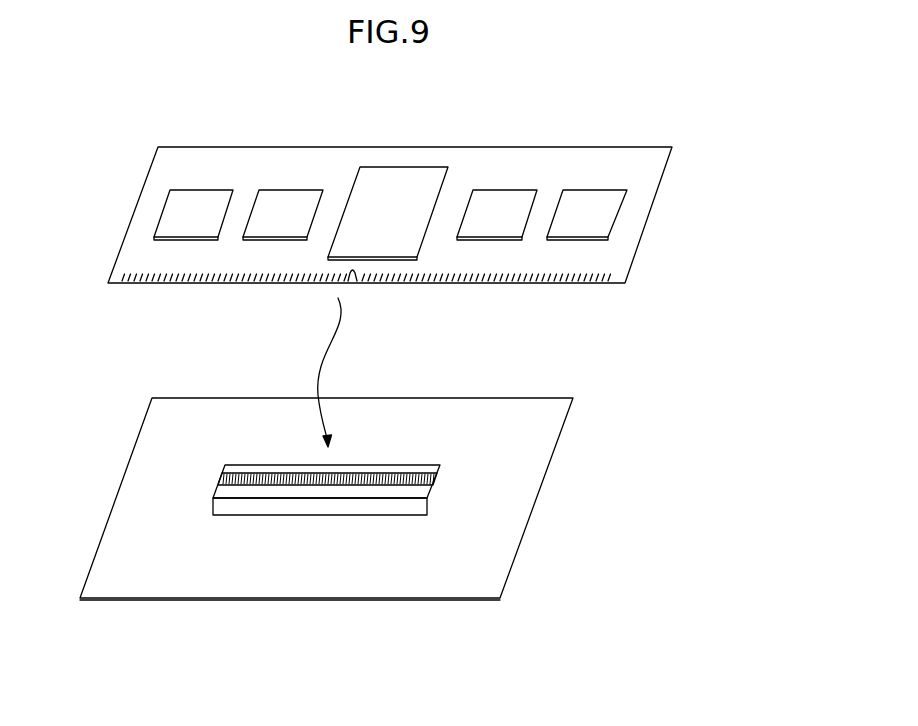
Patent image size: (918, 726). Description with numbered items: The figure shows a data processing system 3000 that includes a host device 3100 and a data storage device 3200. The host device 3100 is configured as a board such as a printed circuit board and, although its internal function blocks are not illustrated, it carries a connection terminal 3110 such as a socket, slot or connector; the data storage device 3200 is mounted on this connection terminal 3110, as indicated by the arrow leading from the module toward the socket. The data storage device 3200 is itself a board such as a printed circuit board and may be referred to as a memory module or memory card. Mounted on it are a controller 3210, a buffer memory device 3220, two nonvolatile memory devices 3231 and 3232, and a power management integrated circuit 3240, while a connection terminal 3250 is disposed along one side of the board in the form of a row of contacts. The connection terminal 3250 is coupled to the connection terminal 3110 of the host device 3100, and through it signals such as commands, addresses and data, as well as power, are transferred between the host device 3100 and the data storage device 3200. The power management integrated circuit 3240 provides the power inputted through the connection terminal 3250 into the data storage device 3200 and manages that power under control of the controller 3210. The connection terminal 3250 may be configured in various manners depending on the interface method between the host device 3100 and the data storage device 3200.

The data processing system 3000 is at (250, 115).
The data storage device 3200 is at (390, 235).
The controller 3210 is at (388, 213).
The buffer memory device 3220 is at (283, 215).
The nonvolatile memory device 3231 is at (497, 215).
The nonvolatile memory device 3232 is at (587, 215).
The power management integrated circuit 3240 is at (193, 215).
The connection terminal 3250 is at (141, 283).
The host device 3100 is at (326, 499).
The connection terminal 3110 is at (455, 460).